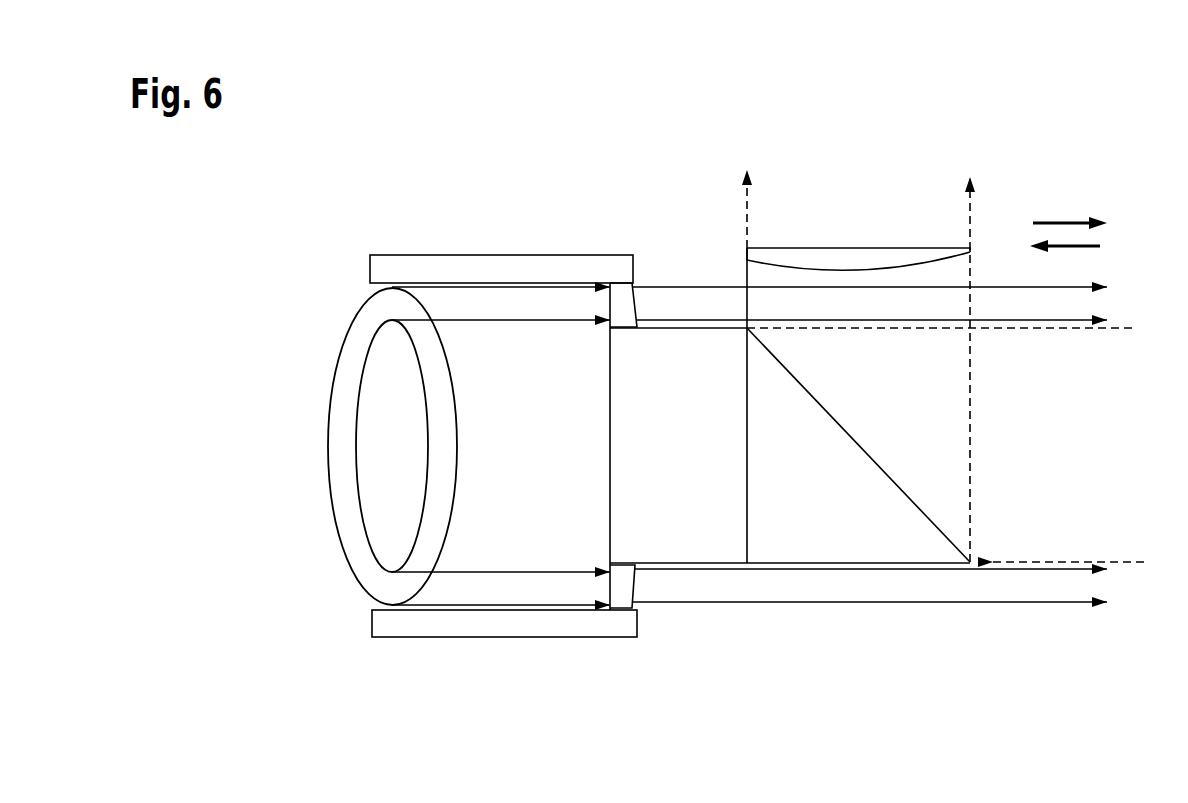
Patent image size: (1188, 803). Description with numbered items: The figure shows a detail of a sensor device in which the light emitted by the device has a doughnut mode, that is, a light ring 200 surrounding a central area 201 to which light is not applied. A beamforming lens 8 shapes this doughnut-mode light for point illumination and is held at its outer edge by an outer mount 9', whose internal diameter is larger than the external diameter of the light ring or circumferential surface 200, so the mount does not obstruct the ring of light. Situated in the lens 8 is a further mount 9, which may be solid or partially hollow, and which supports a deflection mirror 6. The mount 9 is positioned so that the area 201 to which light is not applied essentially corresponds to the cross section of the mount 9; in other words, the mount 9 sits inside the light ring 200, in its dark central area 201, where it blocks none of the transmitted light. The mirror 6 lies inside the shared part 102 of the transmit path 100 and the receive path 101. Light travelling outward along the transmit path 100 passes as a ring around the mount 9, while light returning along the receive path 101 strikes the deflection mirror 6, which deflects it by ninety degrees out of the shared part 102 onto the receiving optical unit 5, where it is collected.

The receiving optical unit 5 is at (840, 244).
The deflection mirror 6 is at (813, 547).
The beamforming lens 8 is at (634, 586).
The mount 9 is at (790, 460).
The outer mount 9' is at (503, 407).
The transmit path 100 is at (1067, 223).
The receive path 101 is at (1082, 246).
The shared part of transmit path and receive path 102 is at (1060, 630).
The circumferential surface 200 is at (356, 383).
The area to which light is not applied 201 is at (386, 443).